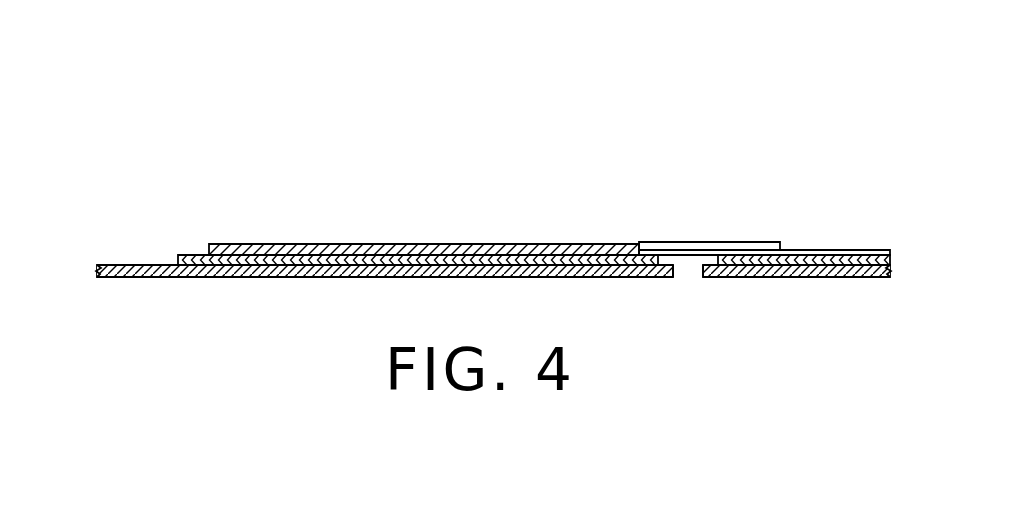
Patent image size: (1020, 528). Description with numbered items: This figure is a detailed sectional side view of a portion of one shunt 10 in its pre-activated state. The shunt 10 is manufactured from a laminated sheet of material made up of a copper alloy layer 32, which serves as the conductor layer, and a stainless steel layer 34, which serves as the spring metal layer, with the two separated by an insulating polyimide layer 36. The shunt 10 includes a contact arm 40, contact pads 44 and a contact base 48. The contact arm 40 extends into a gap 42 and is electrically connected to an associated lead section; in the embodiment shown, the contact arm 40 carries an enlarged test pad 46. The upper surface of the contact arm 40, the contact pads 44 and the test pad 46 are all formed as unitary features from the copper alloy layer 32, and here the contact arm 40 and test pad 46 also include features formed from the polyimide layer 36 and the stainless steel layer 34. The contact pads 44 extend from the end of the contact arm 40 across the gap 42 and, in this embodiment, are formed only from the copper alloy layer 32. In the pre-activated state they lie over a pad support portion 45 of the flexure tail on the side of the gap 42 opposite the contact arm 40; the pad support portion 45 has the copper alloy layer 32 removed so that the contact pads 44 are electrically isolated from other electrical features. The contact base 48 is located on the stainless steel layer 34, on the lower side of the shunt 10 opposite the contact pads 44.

The shunt 10 is at (490, 258).
The copper alloy layer 32 is at (218, 243).
The stainless steel layer 34 is at (100, 277).
The polyimide layer 36 is at (192, 255).
The contact arm 40 is at (573, 200).
The gap 42 is at (690, 268).
The contact pads 44 is at (748, 242).
The pad support portion 45 is at (787, 250).
The test pad 46 is at (465, 242).
The contact base 48 is at (745, 277).